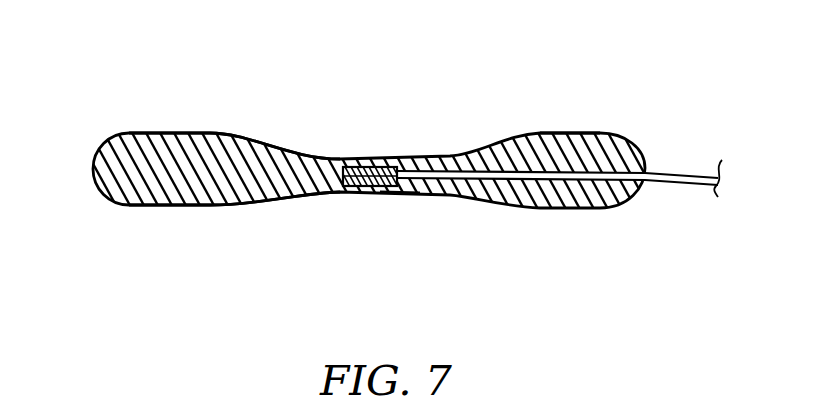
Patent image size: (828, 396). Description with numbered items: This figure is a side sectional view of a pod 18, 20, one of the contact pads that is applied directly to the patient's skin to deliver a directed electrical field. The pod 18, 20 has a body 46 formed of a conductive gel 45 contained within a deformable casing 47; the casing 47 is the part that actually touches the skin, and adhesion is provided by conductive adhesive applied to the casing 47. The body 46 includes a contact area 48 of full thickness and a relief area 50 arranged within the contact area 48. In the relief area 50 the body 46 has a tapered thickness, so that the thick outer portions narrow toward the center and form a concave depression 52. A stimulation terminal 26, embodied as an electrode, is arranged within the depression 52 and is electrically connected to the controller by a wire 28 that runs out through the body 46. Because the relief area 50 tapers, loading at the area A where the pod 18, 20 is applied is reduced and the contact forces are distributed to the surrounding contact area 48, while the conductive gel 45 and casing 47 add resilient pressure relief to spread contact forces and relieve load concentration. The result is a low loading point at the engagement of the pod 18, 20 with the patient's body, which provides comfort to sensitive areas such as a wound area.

The pod 18 is at (362, 113).
The pod 20 is at (362, 170).
The stimulation terminal 26 is at (363, 195).
The wire 28 is at (682, 166).
The conductive gel 45 is at (266, 165).
The body 46 is at (221, 120).
The casing 47 is at (593, 131).
The contact area 48 is at (221, 214).
The relief area 50 is at (275, 242).
The depression 52 is at (299, 207).
The area A is at (400, 195).